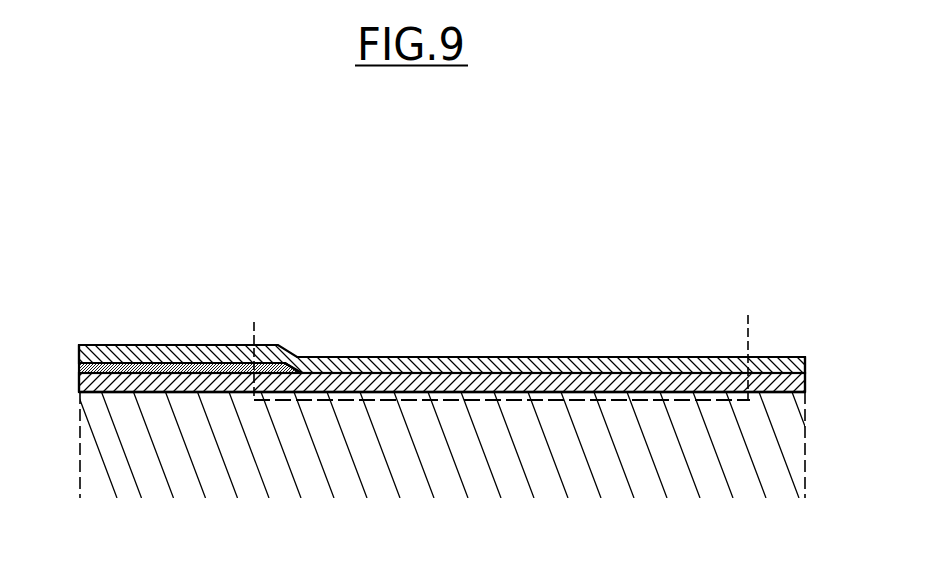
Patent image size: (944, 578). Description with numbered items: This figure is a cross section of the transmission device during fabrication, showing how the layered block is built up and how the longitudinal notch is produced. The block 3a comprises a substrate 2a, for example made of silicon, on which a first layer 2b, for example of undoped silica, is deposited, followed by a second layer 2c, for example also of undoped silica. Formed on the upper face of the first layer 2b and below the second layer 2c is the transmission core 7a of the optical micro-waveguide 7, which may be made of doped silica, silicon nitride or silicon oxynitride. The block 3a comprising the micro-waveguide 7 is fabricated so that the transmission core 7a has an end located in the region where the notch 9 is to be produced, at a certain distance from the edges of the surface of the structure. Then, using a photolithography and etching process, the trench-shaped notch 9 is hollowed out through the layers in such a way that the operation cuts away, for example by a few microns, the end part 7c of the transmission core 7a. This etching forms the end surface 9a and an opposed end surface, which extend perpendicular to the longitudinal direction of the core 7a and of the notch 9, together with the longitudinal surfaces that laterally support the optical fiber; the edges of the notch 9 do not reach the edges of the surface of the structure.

The substrate 2a is at (115, 449).
The first layer 2b is at (78, 388).
The second layer 2c is at (78, 353).
The block 3a is at (809, 468).
The optical micro-waveguide 7 is at (197, 325).
The transmission core 7a is at (288, 368).
The end part of the transmission core 7c is at (205, 363).
The notch 9 is at (324, 404).
The end surface 9a is at (254, 322).